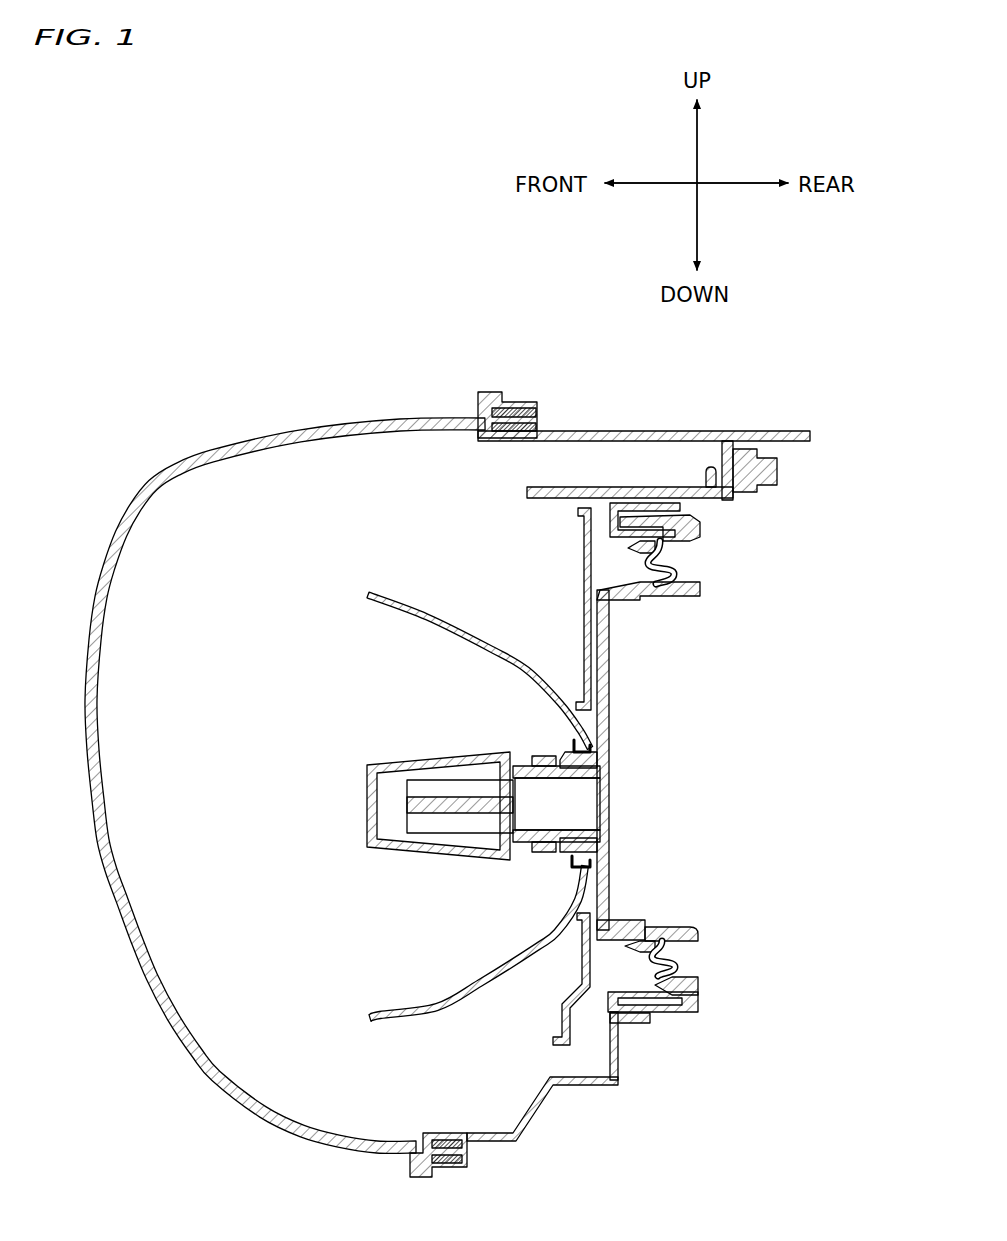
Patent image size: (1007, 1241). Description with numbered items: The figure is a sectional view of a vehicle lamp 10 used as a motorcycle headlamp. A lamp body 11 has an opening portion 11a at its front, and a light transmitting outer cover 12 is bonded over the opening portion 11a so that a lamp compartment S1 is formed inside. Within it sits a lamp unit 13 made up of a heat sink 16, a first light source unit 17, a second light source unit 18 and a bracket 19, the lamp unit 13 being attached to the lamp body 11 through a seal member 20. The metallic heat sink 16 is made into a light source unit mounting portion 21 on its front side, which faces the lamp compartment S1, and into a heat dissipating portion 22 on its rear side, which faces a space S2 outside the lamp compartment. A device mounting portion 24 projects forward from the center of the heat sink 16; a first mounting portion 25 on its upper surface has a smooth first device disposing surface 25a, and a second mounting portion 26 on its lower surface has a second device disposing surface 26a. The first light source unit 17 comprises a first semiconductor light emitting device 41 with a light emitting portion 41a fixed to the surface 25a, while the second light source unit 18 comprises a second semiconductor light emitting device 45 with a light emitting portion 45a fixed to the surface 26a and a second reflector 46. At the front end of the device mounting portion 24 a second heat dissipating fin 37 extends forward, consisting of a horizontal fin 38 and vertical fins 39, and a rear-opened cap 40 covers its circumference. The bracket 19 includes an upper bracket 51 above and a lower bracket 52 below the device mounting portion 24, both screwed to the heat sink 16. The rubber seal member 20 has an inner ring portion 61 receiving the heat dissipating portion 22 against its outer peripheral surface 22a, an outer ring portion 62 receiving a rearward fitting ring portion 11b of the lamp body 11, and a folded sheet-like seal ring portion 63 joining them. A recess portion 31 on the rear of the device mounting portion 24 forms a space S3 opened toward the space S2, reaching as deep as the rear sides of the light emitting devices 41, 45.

The vehicle lamp 10 is at (340, 320).
The lamp body 11 is at (565, 430).
The opening portion 11a is at (497, 437).
The fitting ring portion 11b is at (655, 518).
The outer cover 12 is at (178, 462).
The lamp unit 13 is at (352, 632).
The heat sink 16 is at (578, 700).
The first light source unit 17 is at (460, 703).
The second light source unit 18 is at (460, 902).
The bracket 19 is at (578, 572).
The seal member 20 is at (718, 531).
The light source unit mounting portion 21 is at (550, 880).
The heat dissipating portion 22 is at (732, 682).
The outer peripheral surface 22a is at (690, 596).
The device mounting portion 24 is at (518, 765).
The first mounting portion 25 is at (595, 772).
The first device disposing surface 25a is at (570, 765).
The second mounting portion 26 is at (592, 843).
The second device disposing surface 26a is at (585, 858).
The recess portion 31 is at (575, 830).
The second heat dissipating fin 37 is at (400, 790).
The horizontal fin 38 is at (377, 848).
The vertical fins 39 is at (438, 823).
The cap 40 is at (396, 824).
The first semiconductor light emitting device 41 is at (545, 756).
The light emitting portion 41a is at (540, 756).
The second semiconductor light emitting device 45 is at (540, 853).
The light emitting portion 45a is at (548, 878).
The second reflector 46 is at (455, 1005).
The upper bracket 51 is at (582, 540).
The lower bracket 52 is at (565, 1020).
The inner ring portion 61 is at (694, 596).
The outer ring portion 62 is at (700, 528).
The seal ring portion 63 is at (672, 565).
The lamp compartment S1 is at (180, 898).
The space S2 is at (760, 975).
The space S3 is at (572, 800).